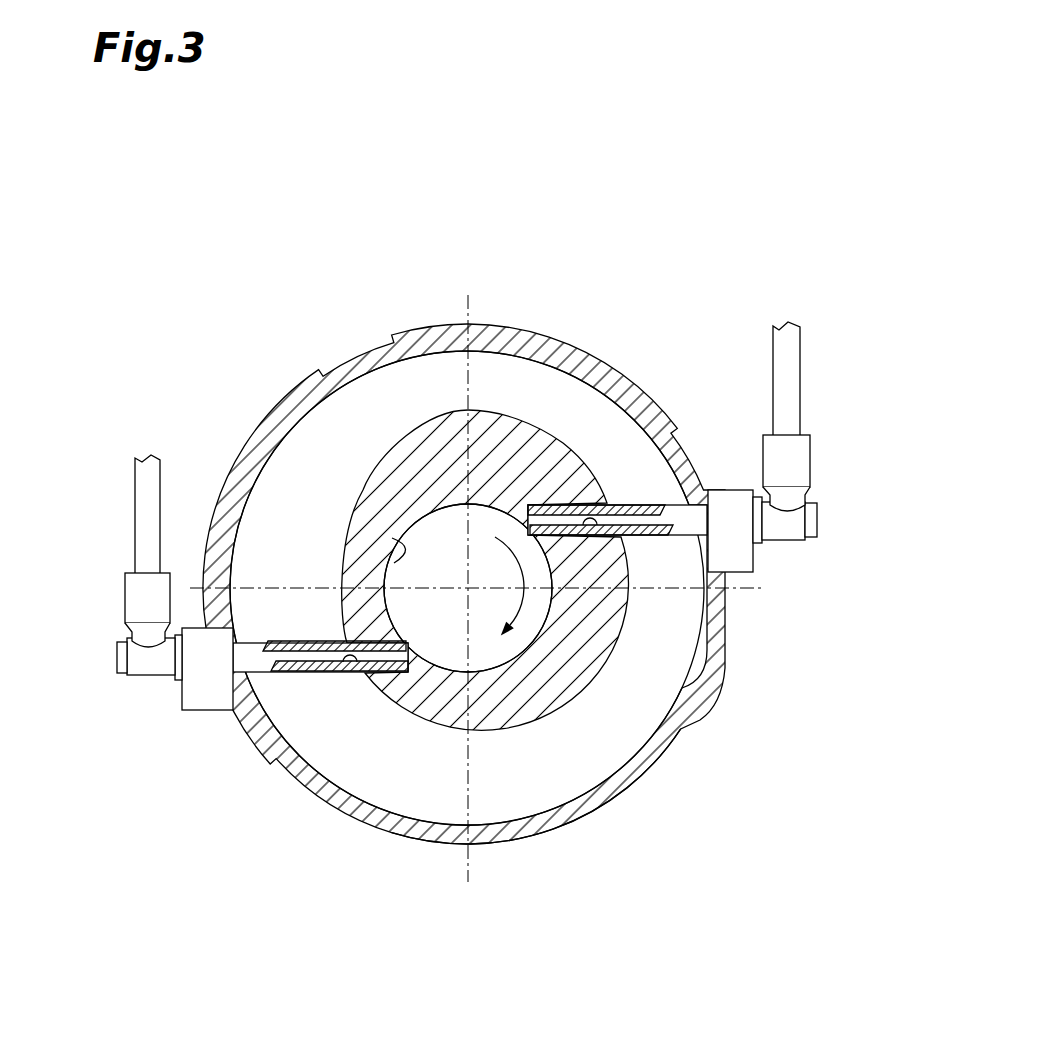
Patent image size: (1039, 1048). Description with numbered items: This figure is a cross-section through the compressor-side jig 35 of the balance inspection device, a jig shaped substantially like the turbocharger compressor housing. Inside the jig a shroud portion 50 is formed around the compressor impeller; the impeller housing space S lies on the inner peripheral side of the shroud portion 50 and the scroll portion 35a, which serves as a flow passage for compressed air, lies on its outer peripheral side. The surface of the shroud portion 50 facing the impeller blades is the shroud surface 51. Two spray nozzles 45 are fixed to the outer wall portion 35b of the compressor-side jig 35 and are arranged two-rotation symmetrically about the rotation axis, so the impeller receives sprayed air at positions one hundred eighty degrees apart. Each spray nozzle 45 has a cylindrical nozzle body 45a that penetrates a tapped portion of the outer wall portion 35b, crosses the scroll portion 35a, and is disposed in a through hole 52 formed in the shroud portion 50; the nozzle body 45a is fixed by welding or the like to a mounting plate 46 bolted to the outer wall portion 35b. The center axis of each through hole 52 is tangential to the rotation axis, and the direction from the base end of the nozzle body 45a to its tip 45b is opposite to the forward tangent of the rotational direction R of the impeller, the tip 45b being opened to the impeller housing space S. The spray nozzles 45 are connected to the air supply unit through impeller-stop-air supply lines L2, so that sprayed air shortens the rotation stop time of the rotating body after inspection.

The compressor-side jig 35 is at (506, 325).
The scroll portion 35a is at (490, 790).
The outer wall portion 35b is at (617, 790).
The spray nozzle 45 is at (820, 517).
The nozzle body 45a is at (650, 540).
The tip 45b is at (530, 502).
The mounting plate 46 is at (757, 563).
The shroud portion 50 is at (443, 497).
The shroud surface 51 is at (410, 547).
The through hole 52 is at (603, 500).
The impeller housing space S is at (455, 577).
The rotational direction R is at (530, 607).
The impeller-stop-air supply line L2 is at (802, 375).